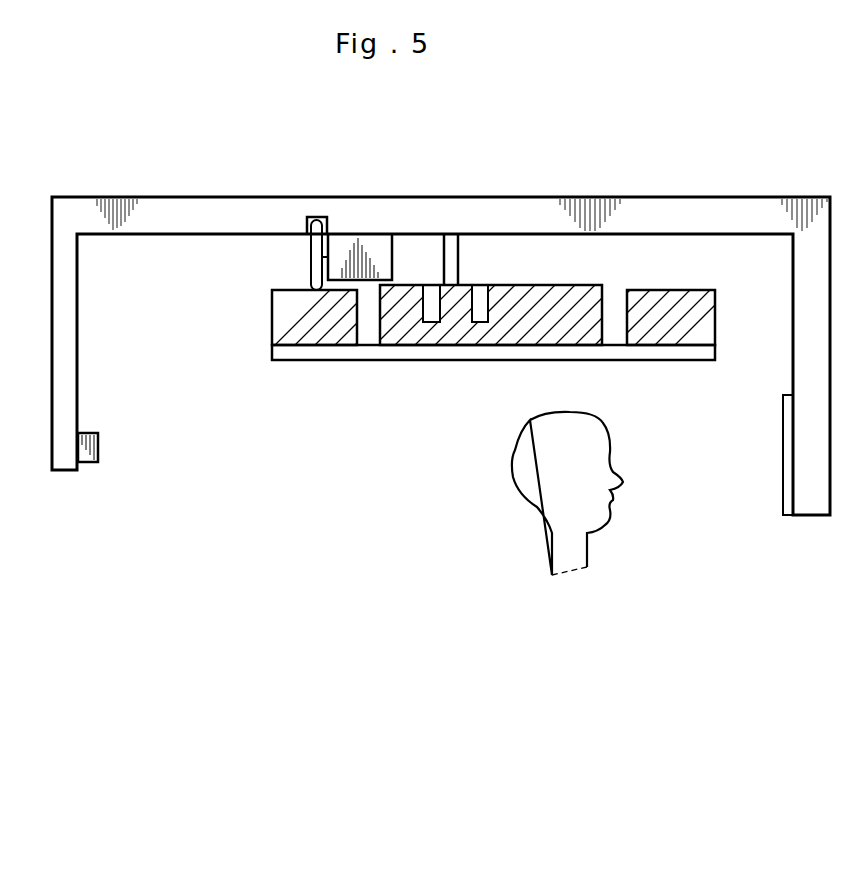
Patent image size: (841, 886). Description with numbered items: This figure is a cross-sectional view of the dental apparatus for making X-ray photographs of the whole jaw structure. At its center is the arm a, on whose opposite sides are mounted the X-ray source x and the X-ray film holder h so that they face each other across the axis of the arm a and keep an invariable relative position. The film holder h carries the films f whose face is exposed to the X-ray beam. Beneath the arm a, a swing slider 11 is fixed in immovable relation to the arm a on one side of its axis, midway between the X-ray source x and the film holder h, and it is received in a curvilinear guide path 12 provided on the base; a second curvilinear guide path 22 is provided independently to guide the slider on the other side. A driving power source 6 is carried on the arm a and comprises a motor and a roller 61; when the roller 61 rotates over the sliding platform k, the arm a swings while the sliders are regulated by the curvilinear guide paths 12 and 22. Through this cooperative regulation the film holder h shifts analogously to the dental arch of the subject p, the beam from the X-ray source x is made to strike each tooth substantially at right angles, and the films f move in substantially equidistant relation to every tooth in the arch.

The arm a is at (455, 212).
The sliding platform k is at (278, 330).
The curvilinear guide path 12 is at (435, 318).
The curvilinear guide path 22 is at (482, 318).
The swing slider 11 is at (450, 265).
The driving power source 6 is at (368, 240).
The roller 61 is at (317, 220).
The X-ray source x is at (98, 447).
The X-ray film holder h is at (786, 462).
The film f is at (783, 503).
The subject p is at (540, 498).